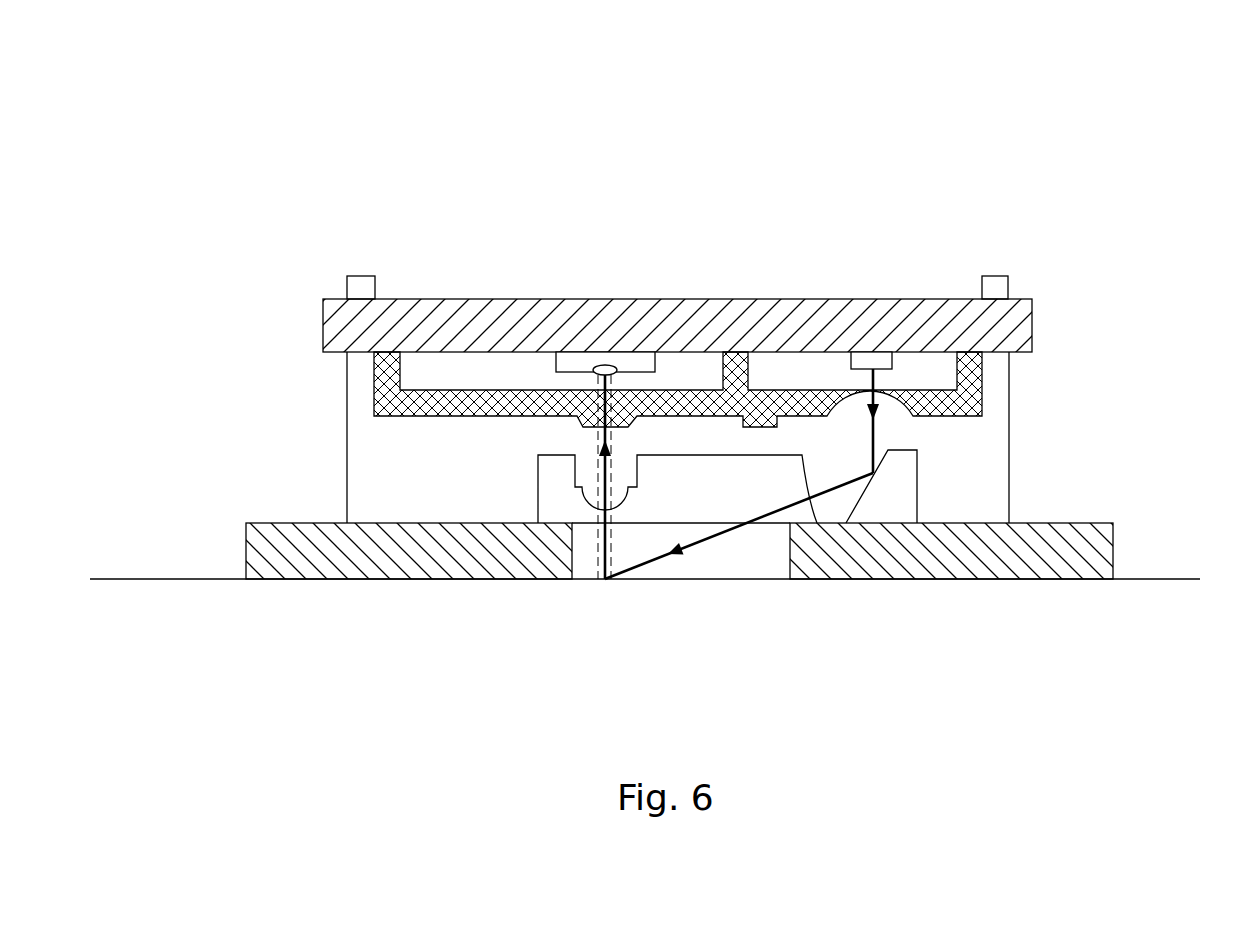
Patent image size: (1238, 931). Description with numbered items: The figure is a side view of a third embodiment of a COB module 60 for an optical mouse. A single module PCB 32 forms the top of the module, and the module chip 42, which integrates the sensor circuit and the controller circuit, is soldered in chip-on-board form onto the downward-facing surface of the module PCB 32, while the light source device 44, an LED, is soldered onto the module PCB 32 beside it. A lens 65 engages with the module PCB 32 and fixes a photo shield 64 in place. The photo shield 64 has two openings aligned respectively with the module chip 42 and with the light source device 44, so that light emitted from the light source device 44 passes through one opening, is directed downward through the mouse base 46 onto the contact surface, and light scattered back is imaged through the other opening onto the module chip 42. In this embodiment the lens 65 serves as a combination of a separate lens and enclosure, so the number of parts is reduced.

The COB module 60 is at (704, 310).
The module PCB 32 is at (692, 298).
The module chip 42 is at (583, 360).
The light source device 44 is at (868, 360).
The photo shield 64 is at (980, 383).
The lens 65 is at (1009, 455).
The mouse base 46 is at (1052, 522).